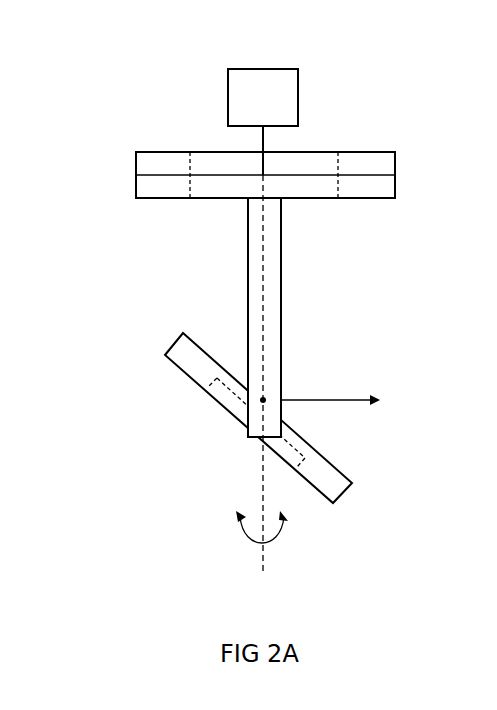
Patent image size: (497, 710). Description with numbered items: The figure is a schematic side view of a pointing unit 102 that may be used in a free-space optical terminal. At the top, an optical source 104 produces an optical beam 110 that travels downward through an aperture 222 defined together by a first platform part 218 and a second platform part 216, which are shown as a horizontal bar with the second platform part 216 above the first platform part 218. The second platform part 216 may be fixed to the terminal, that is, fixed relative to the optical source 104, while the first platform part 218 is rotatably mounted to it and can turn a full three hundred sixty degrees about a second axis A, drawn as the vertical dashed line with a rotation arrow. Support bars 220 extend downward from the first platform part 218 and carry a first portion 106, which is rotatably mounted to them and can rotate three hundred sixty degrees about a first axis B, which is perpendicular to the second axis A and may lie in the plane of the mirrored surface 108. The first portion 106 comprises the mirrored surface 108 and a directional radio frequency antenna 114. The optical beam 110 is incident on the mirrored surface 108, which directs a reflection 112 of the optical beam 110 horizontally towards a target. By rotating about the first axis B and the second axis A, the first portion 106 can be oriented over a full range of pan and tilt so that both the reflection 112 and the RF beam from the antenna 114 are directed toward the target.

The pointing unit 102 is at (119, 113).
The optical source 104 is at (298, 91).
The optical beam 110 is at (265, 140).
The second platform part 216 is at (136, 165).
The first platform part 218 is at (136, 196).
The aperture 222 is at (322, 198).
The support bars 220 is at (248, 250).
The first portion 106 is at (182, 370).
The mirrored surface 108 is at (210, 340).
The directional radio frequency antenna 114 is at (219, 403).
The reflection 112 is at (327, 400).
The second axis A is at (262, 386).
The first axis B is at (263, 404).